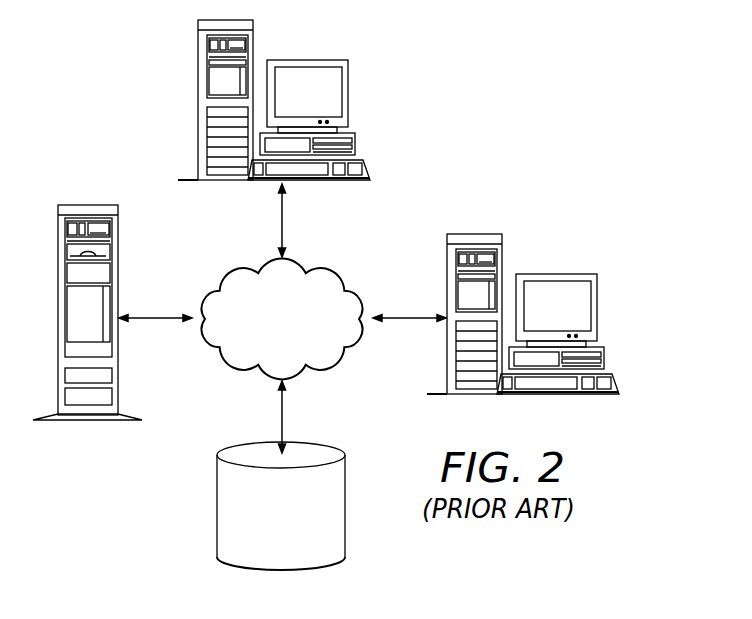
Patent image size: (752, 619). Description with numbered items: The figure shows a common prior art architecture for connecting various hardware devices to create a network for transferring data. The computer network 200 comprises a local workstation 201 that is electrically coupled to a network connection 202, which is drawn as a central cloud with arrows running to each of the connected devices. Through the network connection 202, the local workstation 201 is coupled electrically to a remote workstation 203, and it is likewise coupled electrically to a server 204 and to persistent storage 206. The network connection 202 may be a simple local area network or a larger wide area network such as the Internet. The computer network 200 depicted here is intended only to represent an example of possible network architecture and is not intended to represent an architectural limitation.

The computer network 200 is at (486, 91).
The local workstation 201 is at (307, 60).
The network connection 202 is at (303, 335).
The remote workstation 203 is at (557, 273).
The server 204 is at (90, 205).
The persistent storage 206 is at (217, 502).